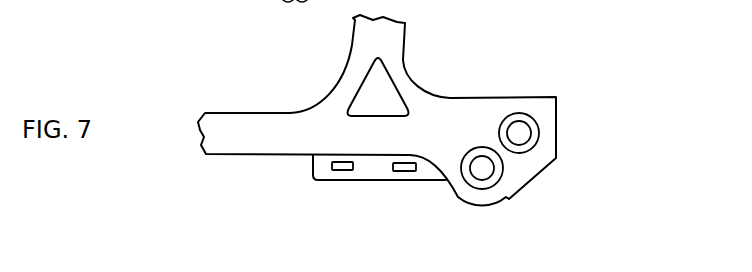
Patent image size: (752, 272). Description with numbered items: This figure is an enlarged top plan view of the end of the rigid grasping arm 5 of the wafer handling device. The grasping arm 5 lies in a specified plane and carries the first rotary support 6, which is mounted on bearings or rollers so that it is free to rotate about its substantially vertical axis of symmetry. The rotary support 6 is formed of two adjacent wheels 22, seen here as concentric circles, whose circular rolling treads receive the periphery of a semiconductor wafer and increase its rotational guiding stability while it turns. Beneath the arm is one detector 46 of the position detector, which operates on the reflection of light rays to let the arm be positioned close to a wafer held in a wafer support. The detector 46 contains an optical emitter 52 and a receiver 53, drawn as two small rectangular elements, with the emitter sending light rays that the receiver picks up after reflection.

The grasping arm 5 is at (250, 125).
The first rotary support 6 is at (545, 132).
The wheels 22 is at (530, 148).
The detector 46 is at (310, 173).
The optical emitter 52 is at (342, 172).
The receiver 53 is at (403, 172).